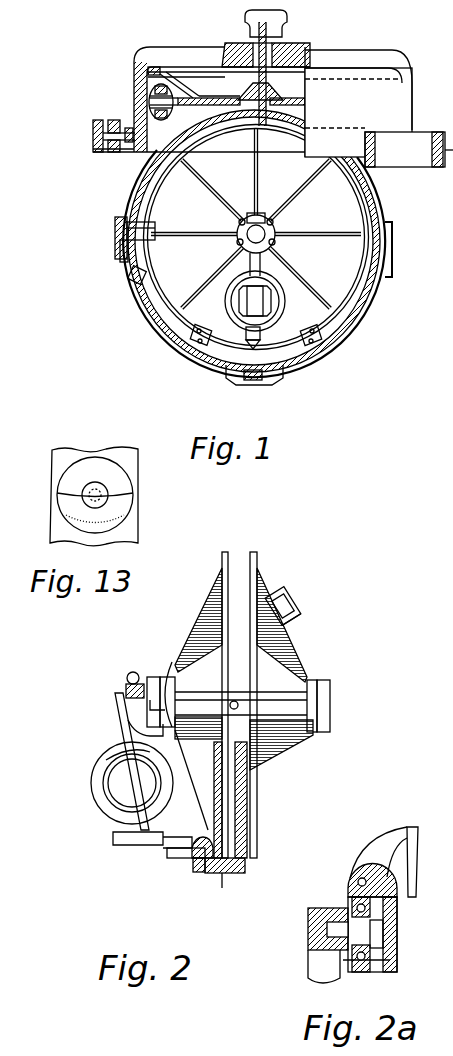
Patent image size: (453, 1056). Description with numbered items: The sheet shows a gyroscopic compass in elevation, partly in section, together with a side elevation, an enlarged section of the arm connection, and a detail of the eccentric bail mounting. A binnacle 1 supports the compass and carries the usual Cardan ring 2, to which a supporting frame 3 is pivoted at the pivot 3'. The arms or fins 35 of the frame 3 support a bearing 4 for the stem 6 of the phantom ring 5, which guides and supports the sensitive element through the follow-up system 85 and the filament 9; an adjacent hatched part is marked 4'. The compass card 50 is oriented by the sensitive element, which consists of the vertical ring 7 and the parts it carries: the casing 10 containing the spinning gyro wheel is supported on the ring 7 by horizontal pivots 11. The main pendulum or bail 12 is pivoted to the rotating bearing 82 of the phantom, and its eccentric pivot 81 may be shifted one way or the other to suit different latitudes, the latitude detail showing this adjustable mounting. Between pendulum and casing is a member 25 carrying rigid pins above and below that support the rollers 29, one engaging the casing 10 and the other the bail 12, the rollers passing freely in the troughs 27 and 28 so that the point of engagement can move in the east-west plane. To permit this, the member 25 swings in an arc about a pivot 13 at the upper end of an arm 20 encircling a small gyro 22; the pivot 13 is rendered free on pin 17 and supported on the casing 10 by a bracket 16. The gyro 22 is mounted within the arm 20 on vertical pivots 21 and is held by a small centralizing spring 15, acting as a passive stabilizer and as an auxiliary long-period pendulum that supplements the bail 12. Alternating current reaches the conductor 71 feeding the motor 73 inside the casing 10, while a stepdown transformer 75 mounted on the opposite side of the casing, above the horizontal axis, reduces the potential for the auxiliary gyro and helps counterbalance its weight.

In FIG. 1, the binnacle 1 is at (92, 127).
In FIG. 1, the Cardan ring 2 is at (118, 120).
In FIG. 1, the supporting frame 3 is at (201, 102).
In FIG. 1, the pivot 3' is at (100, 157).
In FIG. 1, the bearing 4 is at (241, 66).
In FIG. 1, the top plate ring 4' is at (176, 52).
In FIG. 1, the phantom ring 5 is at (132, 187).
In FIG. 1, the stem 6 is at (257, 58).
In FIG. 1, the vertical ring 7 is at (143, 175).
In FIG. 1, the filament 9 is at (268, 62).
In FIG. 1, the casing 10 is at (256, 237).
In FIG. 2, the casing 10 is at (244, 705).
In FIG. 1, the horizontal pivots 11 is at (120, 260).
In FIG. 1, the bail 12 is at (140, 285).
In FIG. 13, the bail 12 is at (137, 492).
In FIG. 2, the bail 12 is at (247, 866).
In FIG. 1, the pivot 13 is at (266, 244).
In FIG. 2, the pivot 13 is at (130, 690).
In FIG. 2A, the pivot 13 is at (343, 913).
In FIG. 2, the centralizing spring 15 is at (115, 758).
In FIG. 2, the bracket 16 is at (138, 673).
In FIG. 2A, the bracket 16 is at (385, 843).
In FIG. 2, the pin 17 is at (130, 677).
In FIG. 2A, the pin 17 is at (356, 878).
In FIG. 2, the arm 20 is at (122, 700).
In FIG. 2A, the arm 20 is at (313, 908).
In FIG. 1, the vertical pivots 21 is at (282, 357).
In FIG. 2, the vertical pivots 21 is at (132, 830).
In FIG. 2, the small gyro 22 is at (92, 789).
In FIG. 2, the member 25 is at (200, 865).
In FIG. 2, the trough 27 is at (197, 840).
In FIG. 2, the trough 28 is at (202, 878).
In FIG. 2, the rollers 29 is at (178, 850).
In FIG. 1, the arms 35 is at (379, 101).
In FIG. 1, the compass card 50 is at (167, 73).
In FIG. 1, the conductor 71 is at (443, 46).
In FIG. 1, the motor 73 is at (443, 19).
In FIG. 2, the stepdown transformer 75 is at (294, 602).
In FIG. 1, the eccentric pivot 81 is at (120, 215).
In FIG. 13, the eccentric pivot 81 is at (57, 490).
In FIG. 1, the rotating bearing 82 is at (118, 228).
In FIG. 13, the rotating bearing 82 is at (108, 462).
In FIG. 1, the follow-up system 85 is at (150, 80).